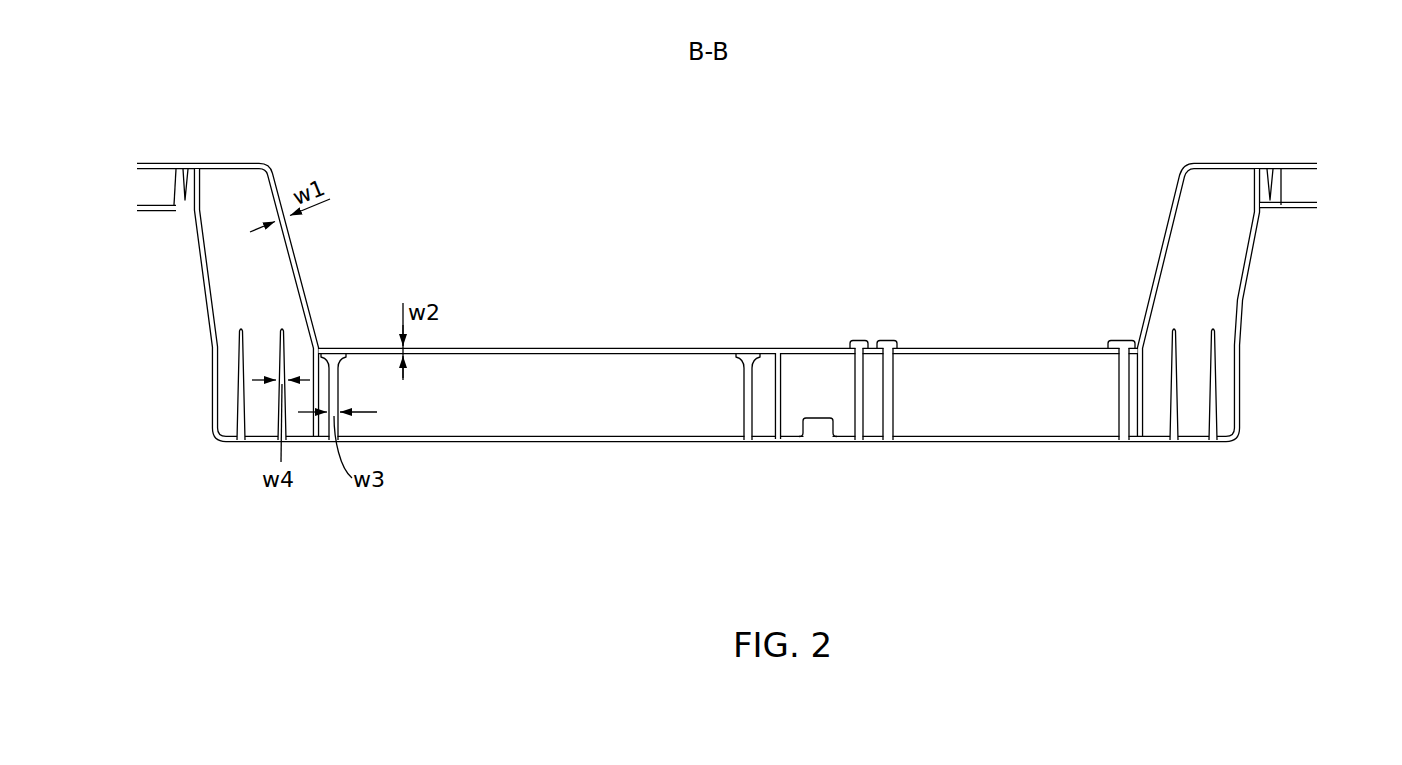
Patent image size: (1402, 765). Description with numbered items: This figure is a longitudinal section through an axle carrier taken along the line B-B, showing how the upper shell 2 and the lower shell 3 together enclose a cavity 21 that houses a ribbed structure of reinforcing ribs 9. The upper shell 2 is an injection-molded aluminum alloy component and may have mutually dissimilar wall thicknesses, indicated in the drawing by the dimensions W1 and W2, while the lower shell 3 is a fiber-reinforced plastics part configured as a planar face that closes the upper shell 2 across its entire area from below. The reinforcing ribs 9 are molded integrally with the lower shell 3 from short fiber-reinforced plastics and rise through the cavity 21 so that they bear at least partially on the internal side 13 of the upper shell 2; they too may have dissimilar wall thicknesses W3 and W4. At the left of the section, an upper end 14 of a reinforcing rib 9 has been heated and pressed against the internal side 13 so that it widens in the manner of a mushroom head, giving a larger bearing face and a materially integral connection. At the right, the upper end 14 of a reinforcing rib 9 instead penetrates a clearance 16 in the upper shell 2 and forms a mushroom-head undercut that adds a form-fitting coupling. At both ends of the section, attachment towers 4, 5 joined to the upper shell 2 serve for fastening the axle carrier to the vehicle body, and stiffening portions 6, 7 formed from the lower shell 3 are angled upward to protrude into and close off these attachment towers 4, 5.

The upper shell 2 is at (471, 344).
The lower shell 3 is at (473, 450).
The attachment tower 4 is at (231, 162).
The attachment tower 5 is at (1233, 162).
The stiffening portion 6 is at (204, 300).
The stiffening portion 7 is at (1248, 319).
The reinforcing ribs 9 is at (176, 204).
The internal side 13 is at (601, 366).
The upper end 14 is at (335, 345).
The clearance 16 is at (899, 348).
The cavity 21 is at (479, 416).